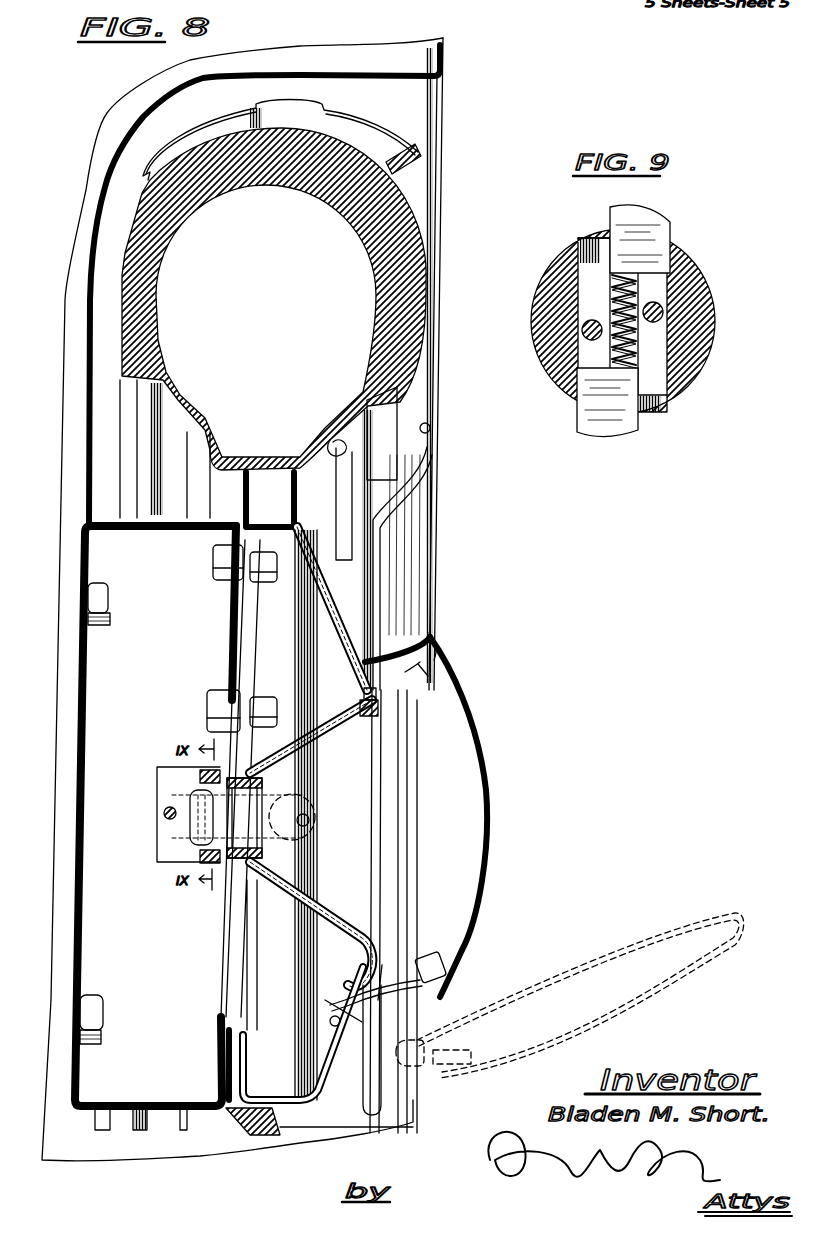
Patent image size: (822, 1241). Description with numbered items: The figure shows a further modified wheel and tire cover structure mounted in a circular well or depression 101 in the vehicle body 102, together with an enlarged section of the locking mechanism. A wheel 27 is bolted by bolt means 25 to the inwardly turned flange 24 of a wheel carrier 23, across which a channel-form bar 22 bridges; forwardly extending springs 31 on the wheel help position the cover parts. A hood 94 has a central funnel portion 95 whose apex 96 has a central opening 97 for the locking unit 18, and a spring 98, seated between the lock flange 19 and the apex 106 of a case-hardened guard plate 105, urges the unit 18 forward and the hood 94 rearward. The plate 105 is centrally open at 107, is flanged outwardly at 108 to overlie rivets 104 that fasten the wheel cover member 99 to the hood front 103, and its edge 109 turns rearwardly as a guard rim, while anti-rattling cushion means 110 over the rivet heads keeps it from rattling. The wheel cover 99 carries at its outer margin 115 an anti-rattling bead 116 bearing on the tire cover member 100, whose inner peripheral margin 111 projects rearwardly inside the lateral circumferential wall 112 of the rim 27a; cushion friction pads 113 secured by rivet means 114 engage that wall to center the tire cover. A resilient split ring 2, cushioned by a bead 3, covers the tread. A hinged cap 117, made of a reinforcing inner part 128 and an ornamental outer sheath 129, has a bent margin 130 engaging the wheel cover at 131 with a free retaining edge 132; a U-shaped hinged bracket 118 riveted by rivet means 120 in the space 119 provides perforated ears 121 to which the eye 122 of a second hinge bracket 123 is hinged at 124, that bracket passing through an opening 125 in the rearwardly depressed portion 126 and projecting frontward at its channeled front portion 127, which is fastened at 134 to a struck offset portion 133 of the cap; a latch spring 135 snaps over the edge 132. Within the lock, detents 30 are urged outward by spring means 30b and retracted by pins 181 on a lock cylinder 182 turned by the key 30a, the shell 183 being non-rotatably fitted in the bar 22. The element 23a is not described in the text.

In FIG. 8, the resilient split ring 2 is at (368, 125).
In FIG. 8, the cushion bead 3 is at (397, 152).
In FIG. 8, the locking unit 18 is at (271, 793).
In FIG. 9, the locking unit 18 is at (715, 272).
In FIG. 8, the flange 19 is at (265, 846).
In FIG. 8, the bar 22 is at (170, 768).
In FIG. 8, the wheel carrier 23 is at (194, 516).
In FIG. 8, the bolt 23a is at (110, 620).
In FIG. 8, the inwardly turned flange 24 is at (231, 608).
In FIG. 8, the bolt means 25 is at (216, 555).
In FIG. 8, the wheel 27 is at (128, 418).
In FIG. 8, the rim 27a is at (397, 397).
In FIG. 9, the detents 30 is at (656, 218).
In FIG. 8, the key 30a is at (310, 810).
In FIG. 9, the spring means 30b is at (574, 370).
In FIG. 8, the forwardly extending springs 31 is at (247, 1118).
In FIG. 8, the hood 94 is at (343, 567).
In FIG. 8, the funnel portion 95 is at (286, 755).
In FIG. 8, the apex 96 is at (233, 773).
In FIG. 8, the central opening 97 is at (230, 800).
In FIG. 8, the spring 98 is at (247, 864).
In FIG. 8, the wheel cover member 99 is at (446, 564).
In FIG. 8, the tire cover member 100 is at (420, 403).
In FIG. 8, the well or depression 101 is at (434, 160).
In FIG. 8, the vehicle body 102 is at (113, 115).
In FIG. 8, the front of funnel portion 103 is at (362, 707).
In FIG. 8, the rivets 104 is at (364, 694).
In FIG. 8, the guard plate 105 is at (395, 811).
In FIG. 8, the apex of guard plate 106 is at (270, 866).
In FIG. 8, the central opening 107 is at (228, 852).
In FIG. 8, the outward flange 108 is at (403, 708).
In FIG. 8, the guard rim 109 is at (400, 684).
In FIG. 8, the anti-rattling cushion means 110 is at (362, 963).
In FIG. 8, the inner peripheral margin 111 is at (340, 490).
In FIG. 8, the lateral circumferential wall 112 is at (322, 426).
In FIG. 8, the cushion friction pads 113 is at (333, 447).
In FIG. 8, the rivet means 114 is at (344, 470).
In FIG. 8, the outer margin 115 is at (430, 426).
In FIG. 8, the anti-rattling bead 116 is at (430, 447).
In FIG. 8, the hinged cap 117 is at (500, 846).
In FIG. 8, the hinged bracket 118 is at (345, 1048).
In FIG. 8, the space 119 is at (329, 1047).
In FIG. 8, the rivet means 120 is at (330, 1021).
In FIG. 8, the perforated ears 121 is at (350, 1003).
In FIG. 8, the eye 122 is at (378, 1016).
In FIG. 8, the second hinge bracket 123 is at (439, 944).
In FIG. 8, the hinge 124 is at (381, 1030).
In FIG. 8, the opening 125 is at (388, 973).
In FIG. 8, the rearwardly depressed portion 126 is at (386, 908).
In FIG. 8, the channeled front portion 127 is at (409, 964).
In FIG. 8, the reinforcing inner part 128 is at (484, 784).
In FIG. 8, the ornamental outer sheath 129 is at (490, 813).
In FIG. 8, the bent margin 130 is at (435, 632).
In FIG. 8, the engagement point 131 is at (414, 633).
In FIG. 8, the free retaining edge 132 is at (406, 772).
In FIG. 8, the struck offset portion 133 is at (444, 972).
In FIG. 8, the fastening 134 is at (440, 978).
In FIG. 8, the latch spring 135 is at (410, 676).
In FIG. 9, the pins 181 is at (582, 327).
In FIG. 8, the lock cylinder 182 is at (270, 792).
In FIG. 8, the shell 183 is at (192, 832).